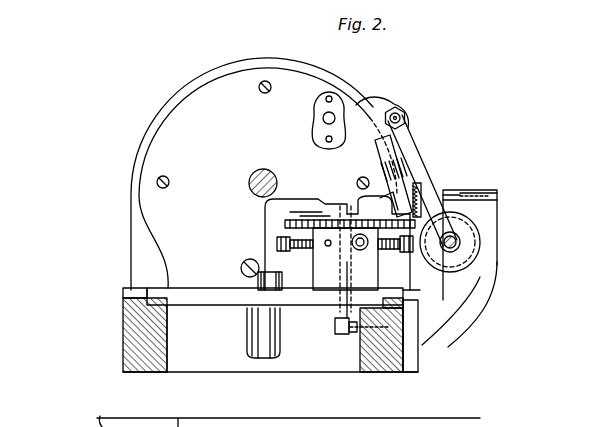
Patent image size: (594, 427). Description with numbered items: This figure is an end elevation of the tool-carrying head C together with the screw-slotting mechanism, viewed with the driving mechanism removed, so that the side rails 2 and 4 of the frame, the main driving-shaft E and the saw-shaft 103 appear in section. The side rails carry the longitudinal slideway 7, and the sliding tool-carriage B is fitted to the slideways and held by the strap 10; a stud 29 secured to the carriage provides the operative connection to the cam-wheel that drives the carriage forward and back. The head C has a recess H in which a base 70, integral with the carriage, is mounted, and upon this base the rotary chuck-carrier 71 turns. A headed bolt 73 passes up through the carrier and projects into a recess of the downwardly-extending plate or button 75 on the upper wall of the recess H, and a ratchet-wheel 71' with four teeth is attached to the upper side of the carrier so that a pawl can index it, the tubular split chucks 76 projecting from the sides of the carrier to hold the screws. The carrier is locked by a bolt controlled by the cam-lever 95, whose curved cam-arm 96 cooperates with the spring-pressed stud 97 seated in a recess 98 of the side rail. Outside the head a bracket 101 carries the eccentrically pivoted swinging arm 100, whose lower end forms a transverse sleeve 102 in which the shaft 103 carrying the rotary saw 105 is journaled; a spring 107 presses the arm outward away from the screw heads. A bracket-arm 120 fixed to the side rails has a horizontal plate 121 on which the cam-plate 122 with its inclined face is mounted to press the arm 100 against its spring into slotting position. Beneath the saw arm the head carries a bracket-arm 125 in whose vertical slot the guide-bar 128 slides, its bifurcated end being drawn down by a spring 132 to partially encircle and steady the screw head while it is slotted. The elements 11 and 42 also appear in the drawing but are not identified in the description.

The casing 11 is at (164, 101).
The tool-carrying head C is at (264, 65).
The main driving-shaft E is at (252, 175).
The bracket plate 42 is at (312, 130).
The bracket 101 is at (382, 110).
The spring 107 is at (425, 176).
The guide-bar 128 is at (413, 185).
The spring 132 is at (468, 192).
The bracket-arm 125 is at (384, 200).
The swinging arm 100 is at (437, 190).
The cam-plate 122 is at (470, 195).
The horizontal plate 121 is at (485, 198).
The rotary saw 105 is at (472, 232).
The transverse sleeve 102 is at (460, 247).
The shaft 103 is at (457, 247).
The bracket-arm 120 is at (493, 293).
The rotary chuck-carrier 71 is at (319, 244).
The ratchet-wheel 71' is at (315, 197).
The plate or button 75 is at (366, 210).
The tubular split chucks 76 is at (292, 252).
The headed bolt 73 is at (357, 205).
The cam-lever 95 is at (352, 262).
The base 70 is at (347, 318).
The spring-pressed stud 97 is at (357, 334).
The recess H is at (242, 264).
The strap 10 is at (134, 289).
The longitudinal slideway 7 is at (152, 299).
The side rail 4 is at (124, 316).
The tool-carriage B is at (126, 310).
The side rail 2 is at (420, 352).
The recess 98 is at (396, 355).
The cam-arm 96 is at (412, 291).
The stud 29 is at (246, 334).